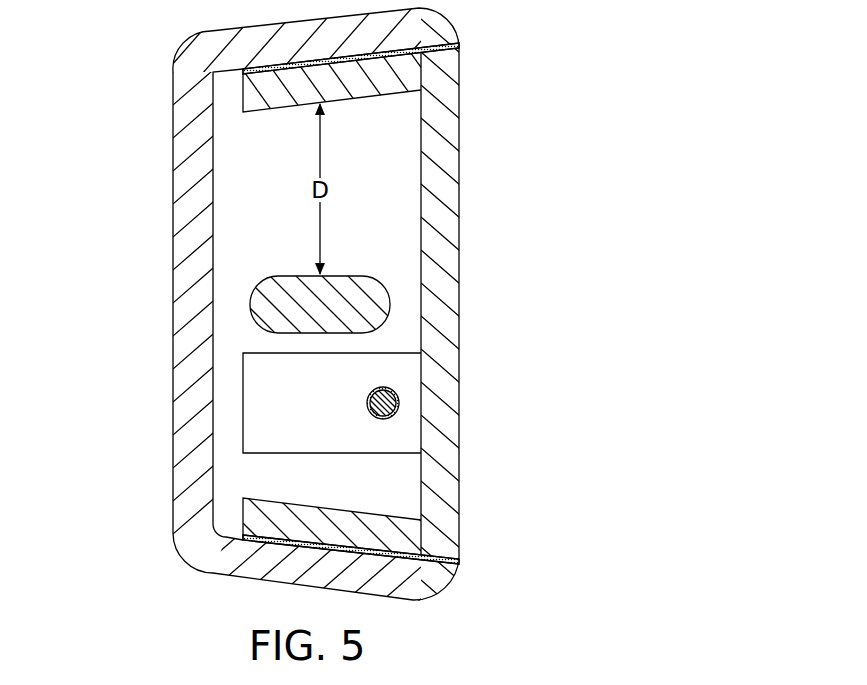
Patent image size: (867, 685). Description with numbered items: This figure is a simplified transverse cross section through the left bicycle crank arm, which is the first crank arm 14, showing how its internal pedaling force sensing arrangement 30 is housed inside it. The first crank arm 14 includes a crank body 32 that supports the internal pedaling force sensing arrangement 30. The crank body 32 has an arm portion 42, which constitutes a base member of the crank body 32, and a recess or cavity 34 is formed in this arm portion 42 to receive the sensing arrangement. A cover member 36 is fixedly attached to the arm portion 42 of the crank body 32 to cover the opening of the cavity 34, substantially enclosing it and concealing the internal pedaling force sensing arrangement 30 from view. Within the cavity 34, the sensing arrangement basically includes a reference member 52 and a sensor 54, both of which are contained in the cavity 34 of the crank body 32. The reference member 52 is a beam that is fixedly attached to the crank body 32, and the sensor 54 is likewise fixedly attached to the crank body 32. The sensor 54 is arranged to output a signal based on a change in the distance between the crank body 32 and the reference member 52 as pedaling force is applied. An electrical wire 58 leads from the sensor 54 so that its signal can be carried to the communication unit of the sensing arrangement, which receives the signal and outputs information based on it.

The first crank arm 14 is at (131, 131).
The internal pedaling force sensing arrangement 30 is at (388, 472).
The crank body 32 is at (462, 230).
The cavity 34 is at (393, 158).
The cover member 36 is at (172, 354).
The arm portion 42 is at (460, 305).
The reference member 52 is at (270, 278).
The sensor 54 is at (317, 453).
The electrical wire 58 is at (370, 393).